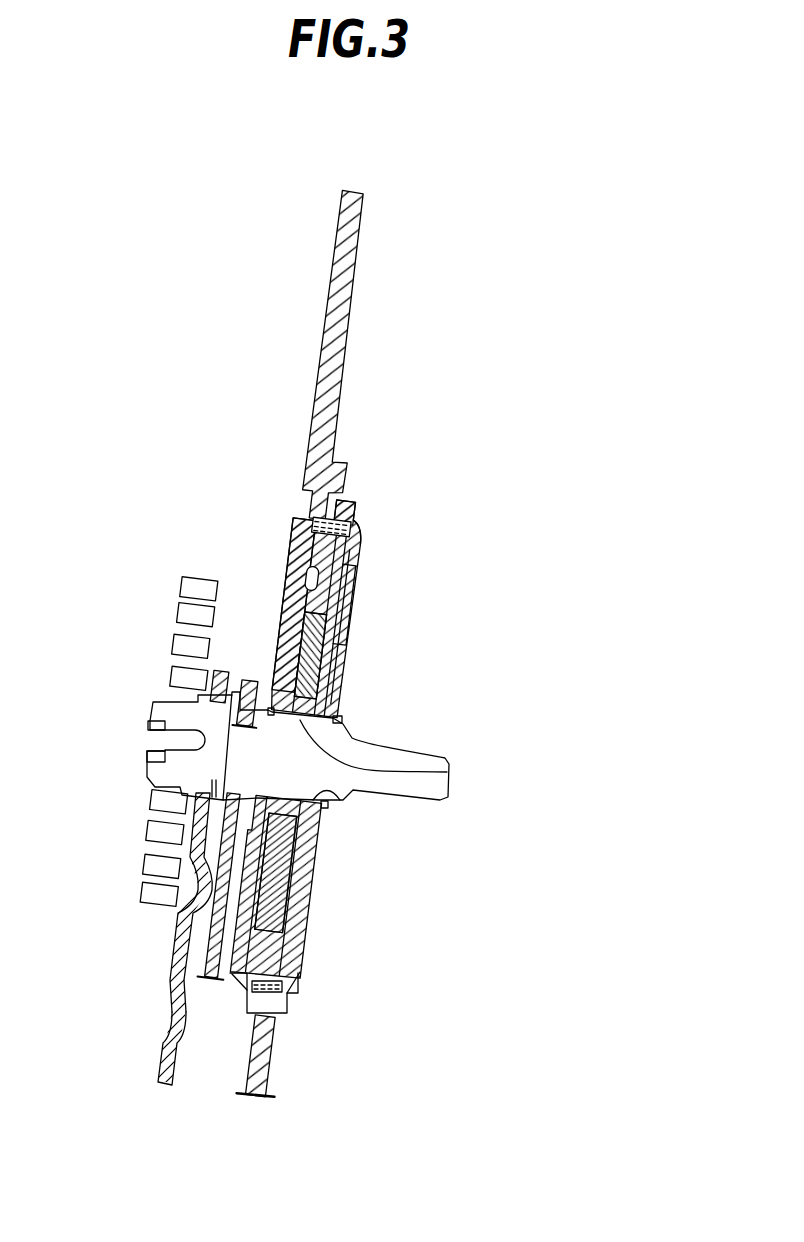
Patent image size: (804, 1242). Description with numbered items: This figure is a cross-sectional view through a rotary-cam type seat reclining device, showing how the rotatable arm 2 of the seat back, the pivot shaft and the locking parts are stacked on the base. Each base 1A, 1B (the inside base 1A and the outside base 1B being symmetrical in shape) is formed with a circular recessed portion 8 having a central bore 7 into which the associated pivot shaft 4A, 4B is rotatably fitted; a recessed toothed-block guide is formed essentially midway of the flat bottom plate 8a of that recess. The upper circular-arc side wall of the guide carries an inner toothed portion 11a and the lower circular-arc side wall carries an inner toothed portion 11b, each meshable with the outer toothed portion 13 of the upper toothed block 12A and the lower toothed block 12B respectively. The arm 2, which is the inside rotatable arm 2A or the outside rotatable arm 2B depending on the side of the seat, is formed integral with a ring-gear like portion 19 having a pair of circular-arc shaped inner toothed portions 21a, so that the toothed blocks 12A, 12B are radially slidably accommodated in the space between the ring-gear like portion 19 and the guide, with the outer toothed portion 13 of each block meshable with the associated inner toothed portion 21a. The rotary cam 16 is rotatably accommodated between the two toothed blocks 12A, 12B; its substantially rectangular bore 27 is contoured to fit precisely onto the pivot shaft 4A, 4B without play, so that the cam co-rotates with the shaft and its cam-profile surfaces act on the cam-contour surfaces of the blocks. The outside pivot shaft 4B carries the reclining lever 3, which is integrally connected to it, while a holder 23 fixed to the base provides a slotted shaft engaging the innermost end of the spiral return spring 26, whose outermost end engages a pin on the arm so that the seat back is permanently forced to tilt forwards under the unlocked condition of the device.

The arm 2 is at (428, 356).
The inside rotatable arm 2A is at (339, 356).
The outside rotatable arm 2B is at (353, 292).
The inner toothed portion 21a is at (300, 527).
The upper toothed block 12A is at (305, 555).
The ring-gear like portion 19 is at (300, 590).
The return spring 26 is at (182, 588).
The outer toothed portion 13 is at (355, 507).
The inner toothed portion 11a is at (363, 545).
The circular recessed portion 8 is at (357, 558).
The flat bottom plate 8a is at (347, 607).
The rotary cam 16 is at (320, 663).
The inside pivot shaft 4A is at (346, 735).
The outside pivot shaft 4B is at (333, 740).
The rectangular bore 27 is at (448, 772).
The central bore 7 is at (343, 797).
The reclining lever 3 is at (205, 962).
The holder 23 is at (165, 1070).
The lower toothed block 12B is at (307, 953).
The inner toothed portion 11b is at (307, 982).
The inside base 1A is at (313, 1058).
The outside base 1B is at (272, 1067).